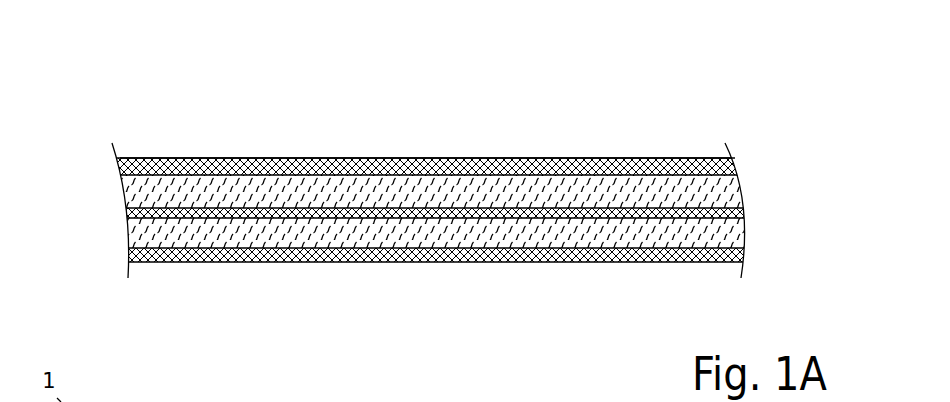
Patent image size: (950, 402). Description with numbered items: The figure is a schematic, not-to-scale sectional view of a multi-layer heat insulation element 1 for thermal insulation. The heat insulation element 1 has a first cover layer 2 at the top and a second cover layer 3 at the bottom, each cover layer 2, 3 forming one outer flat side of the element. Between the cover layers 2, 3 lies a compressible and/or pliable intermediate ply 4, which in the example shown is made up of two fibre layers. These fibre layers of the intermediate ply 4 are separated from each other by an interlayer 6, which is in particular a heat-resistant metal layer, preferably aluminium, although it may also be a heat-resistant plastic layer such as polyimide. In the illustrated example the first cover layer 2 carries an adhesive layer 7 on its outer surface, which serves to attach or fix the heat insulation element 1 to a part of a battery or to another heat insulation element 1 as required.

The multi-layer heat insulation element 1 is at (143, 97).
The first cover layer 2 is at (735, 163).
The second cover layer 3 is at (737, 257).
The intermediate ply 4 is at (496, 212).
The interlayer 6 is at (735, 207).
The adhesive layer 7 is at (366, 158).